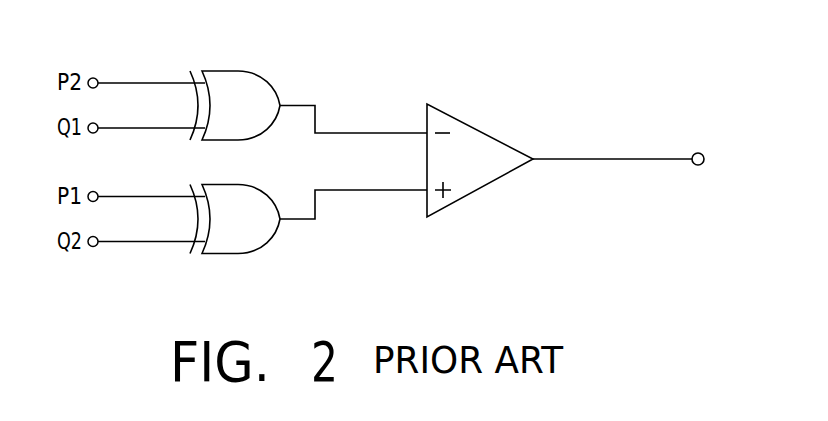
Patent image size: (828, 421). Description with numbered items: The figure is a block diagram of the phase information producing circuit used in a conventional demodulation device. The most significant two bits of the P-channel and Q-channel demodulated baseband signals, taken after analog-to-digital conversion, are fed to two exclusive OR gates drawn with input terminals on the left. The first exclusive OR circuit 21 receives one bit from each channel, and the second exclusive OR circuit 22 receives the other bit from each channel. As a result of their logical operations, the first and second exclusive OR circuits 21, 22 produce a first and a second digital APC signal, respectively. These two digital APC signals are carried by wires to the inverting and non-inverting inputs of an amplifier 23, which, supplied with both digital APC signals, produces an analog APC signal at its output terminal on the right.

The first exclusive OR circuit 21 is at (225, 71).
The second exclusive OR circuit 22 is at (220, 253).
The amplifier 23 is at (472, 126).